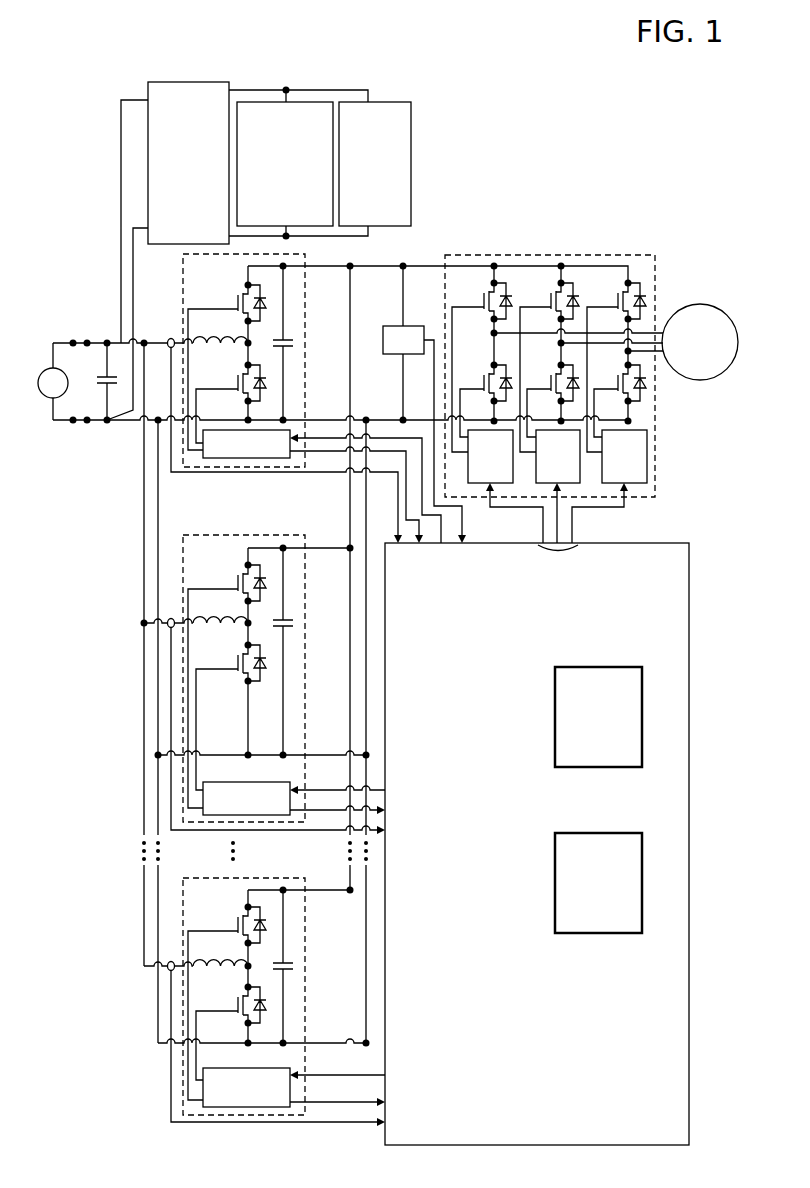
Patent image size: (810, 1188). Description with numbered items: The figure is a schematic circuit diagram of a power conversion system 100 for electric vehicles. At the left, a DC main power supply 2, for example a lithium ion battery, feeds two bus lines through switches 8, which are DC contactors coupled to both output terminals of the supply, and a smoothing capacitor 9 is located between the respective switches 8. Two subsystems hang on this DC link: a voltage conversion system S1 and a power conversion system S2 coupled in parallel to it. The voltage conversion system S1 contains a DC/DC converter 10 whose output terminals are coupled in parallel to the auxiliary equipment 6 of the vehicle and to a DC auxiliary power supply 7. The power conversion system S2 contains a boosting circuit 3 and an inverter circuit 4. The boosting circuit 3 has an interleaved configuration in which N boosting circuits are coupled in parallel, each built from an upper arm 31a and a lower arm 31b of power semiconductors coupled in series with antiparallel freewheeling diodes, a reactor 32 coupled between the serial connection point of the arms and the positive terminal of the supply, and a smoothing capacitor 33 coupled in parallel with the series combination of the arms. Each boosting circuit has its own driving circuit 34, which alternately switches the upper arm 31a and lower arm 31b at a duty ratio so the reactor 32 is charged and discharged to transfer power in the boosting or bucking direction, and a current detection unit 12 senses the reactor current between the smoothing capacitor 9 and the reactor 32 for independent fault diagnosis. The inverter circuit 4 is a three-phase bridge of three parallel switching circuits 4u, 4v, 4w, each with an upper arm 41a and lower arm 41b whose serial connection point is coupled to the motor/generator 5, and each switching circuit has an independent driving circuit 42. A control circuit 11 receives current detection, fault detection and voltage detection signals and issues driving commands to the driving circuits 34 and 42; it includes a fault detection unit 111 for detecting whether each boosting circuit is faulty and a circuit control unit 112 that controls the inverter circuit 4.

The power conversion system 100 is at (449, 132).
The voltage conversion system S1 is at (128, 72).
The power conversion system S2 is at (428, 220).
The DC main power supply 2 is at (43, 372).
The boosting circuit 3 is at (182, 257).
The inverter circuit 4 is at (655, 255).
The switching circuit 4u is at (497, 278).
The switching circuit 4v is at (563, 278).
The switching circuit 4w is at (630, 278).
The motor/generator 5 is at (703, 304).
The auxiliary equipment 6 is at (391, 102).
The DC auxiliary power supply 7 is at (300, 102).
The switches 8 is at (78, 340).
The smoothing capacitor 9 is at (102, 380).
The DC/DC converter 10 is at (206, 82).
The control circuit 11 is at (559, 844).
The current detection unit 12 is at (170, 338).
The upper arm 31a is at (235, 308).
The lower arm 31b is at (235, 389).
The reactor 32 is at (212, 340).
The smoothing capacitor 33 is at (293, 343).
The driving circuit 34 is at (233, 459).
The upper arm 41a is at (481, 307).
The lower arm 41b is at (466, 383).
The driving circuit 42 is at (504, 507).
The fault detection unit 111 is at (598, 717).
The circuit control unit 112 is at (598, 883).